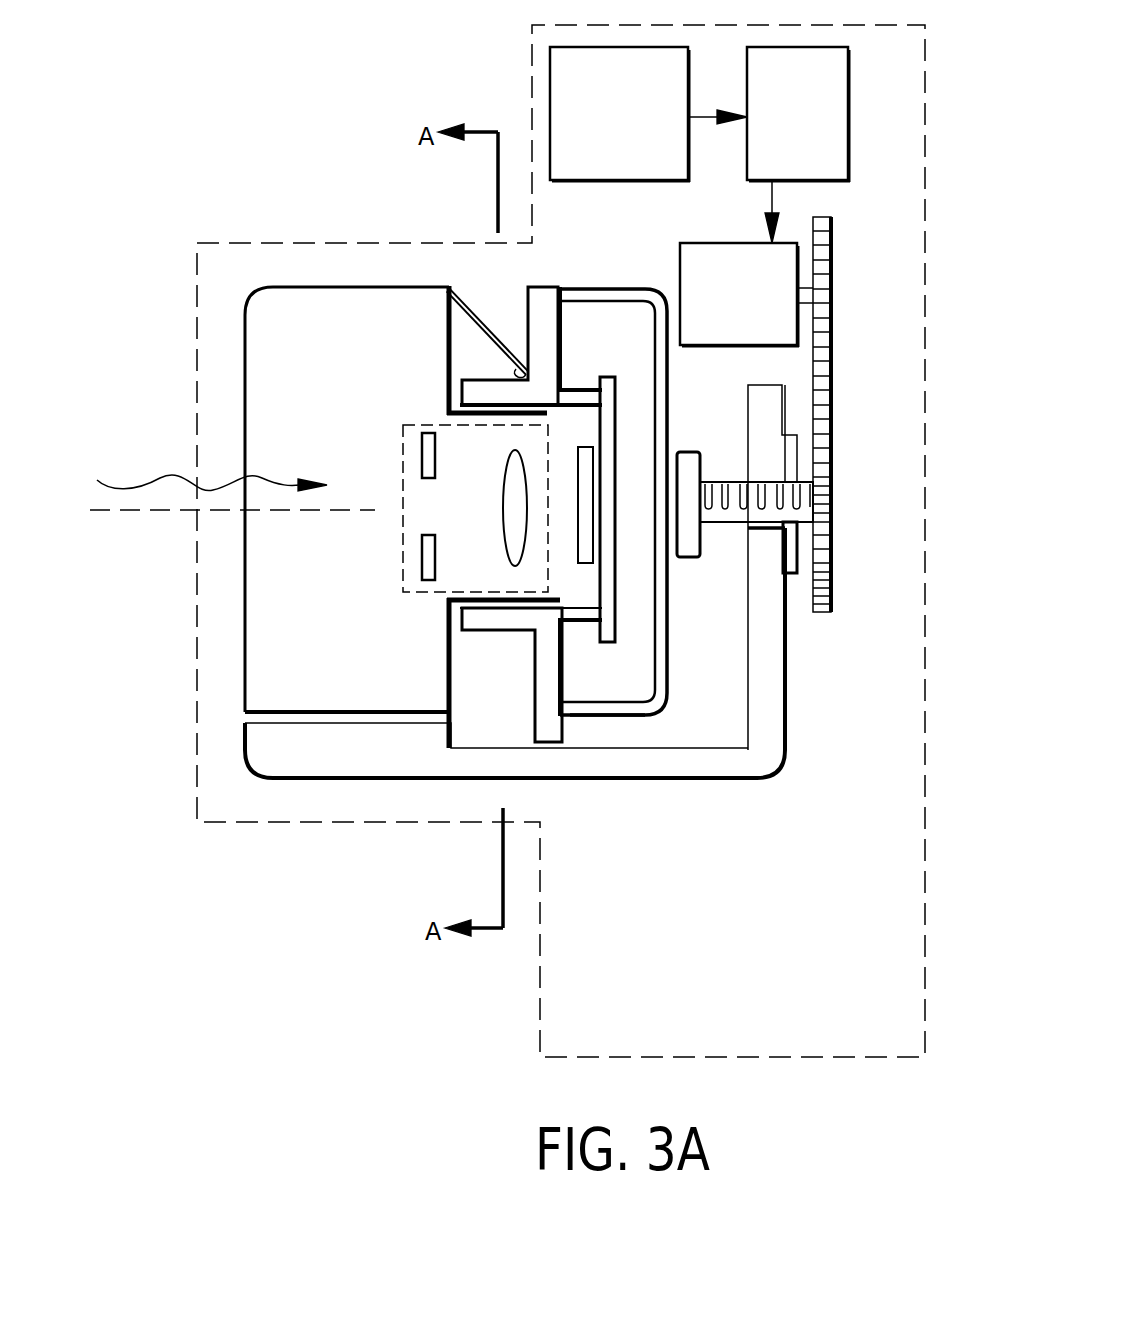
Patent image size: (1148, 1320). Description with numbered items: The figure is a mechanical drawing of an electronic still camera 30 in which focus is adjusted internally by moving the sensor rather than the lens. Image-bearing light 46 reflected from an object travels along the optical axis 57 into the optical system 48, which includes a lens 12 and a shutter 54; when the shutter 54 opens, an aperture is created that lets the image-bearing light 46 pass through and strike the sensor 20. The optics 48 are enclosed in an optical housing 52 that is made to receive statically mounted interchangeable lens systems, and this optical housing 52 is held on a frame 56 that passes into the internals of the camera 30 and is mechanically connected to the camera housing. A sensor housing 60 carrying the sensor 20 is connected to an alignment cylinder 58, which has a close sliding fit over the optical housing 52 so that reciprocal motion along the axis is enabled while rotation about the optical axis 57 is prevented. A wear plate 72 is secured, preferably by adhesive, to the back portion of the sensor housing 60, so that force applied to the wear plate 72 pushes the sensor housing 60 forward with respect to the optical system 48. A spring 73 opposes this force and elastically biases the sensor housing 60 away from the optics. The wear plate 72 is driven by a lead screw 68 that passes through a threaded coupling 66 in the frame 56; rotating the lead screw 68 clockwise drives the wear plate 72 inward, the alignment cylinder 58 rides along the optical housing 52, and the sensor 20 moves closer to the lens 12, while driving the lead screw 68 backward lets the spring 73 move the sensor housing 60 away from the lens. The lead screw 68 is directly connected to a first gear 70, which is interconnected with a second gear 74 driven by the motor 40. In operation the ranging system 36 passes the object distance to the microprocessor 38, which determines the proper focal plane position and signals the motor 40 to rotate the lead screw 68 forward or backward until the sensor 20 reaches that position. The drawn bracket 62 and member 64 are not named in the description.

The electronic still camera 30 is at (608, 1015).
The ranging system 36 is at (595, 160).
The microprocessor 38 is at (780, 158).
The motor 40 is at (743, 326).
The second gear 74 is at (832, 313).
The optical housing 52 is at (262, 660).
The frame 56 is at (338, 768).
The first gear 70 is at (834, 538).
The threaded coupling 66 is at (792, 578).
The lead screw 68 is at (802, 498).
The wear plate 72 is at (688, 455).
The frame 62 is at (578, 622).
The sensor housing 60 is at (622, 716).
The spring 73 is at (490, 326).
The alignment cylinder 58 is at (542, 672).
The sensor 20 is at (588, 462).
The pivot 64 is at (612, 607).
The optical system 48 is at (490, 574).
The shutter 54 is at (422, 455).
The lens 12 is at (505, 480).
The image-bearing light 46 is at (180, 482).
The optical axis 57 is at (147, 513).